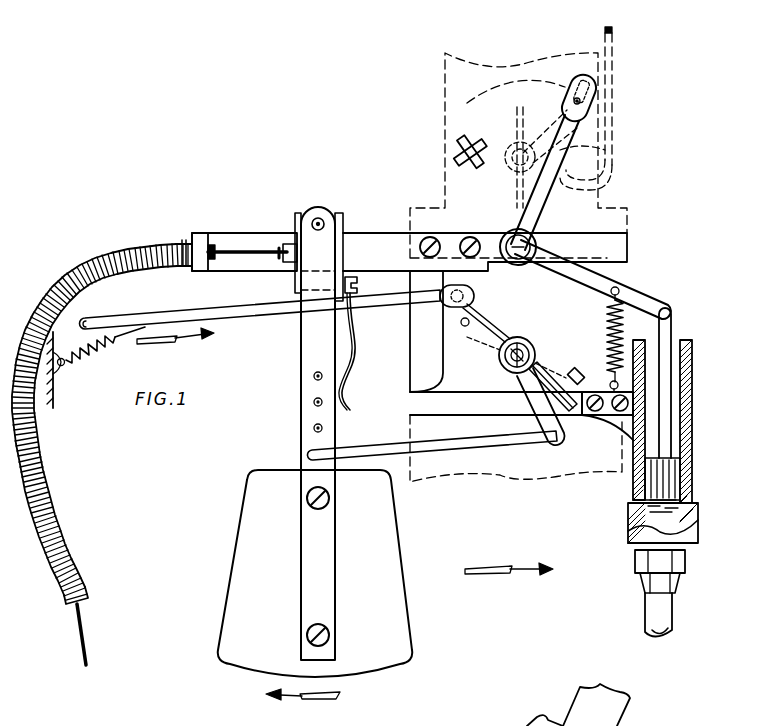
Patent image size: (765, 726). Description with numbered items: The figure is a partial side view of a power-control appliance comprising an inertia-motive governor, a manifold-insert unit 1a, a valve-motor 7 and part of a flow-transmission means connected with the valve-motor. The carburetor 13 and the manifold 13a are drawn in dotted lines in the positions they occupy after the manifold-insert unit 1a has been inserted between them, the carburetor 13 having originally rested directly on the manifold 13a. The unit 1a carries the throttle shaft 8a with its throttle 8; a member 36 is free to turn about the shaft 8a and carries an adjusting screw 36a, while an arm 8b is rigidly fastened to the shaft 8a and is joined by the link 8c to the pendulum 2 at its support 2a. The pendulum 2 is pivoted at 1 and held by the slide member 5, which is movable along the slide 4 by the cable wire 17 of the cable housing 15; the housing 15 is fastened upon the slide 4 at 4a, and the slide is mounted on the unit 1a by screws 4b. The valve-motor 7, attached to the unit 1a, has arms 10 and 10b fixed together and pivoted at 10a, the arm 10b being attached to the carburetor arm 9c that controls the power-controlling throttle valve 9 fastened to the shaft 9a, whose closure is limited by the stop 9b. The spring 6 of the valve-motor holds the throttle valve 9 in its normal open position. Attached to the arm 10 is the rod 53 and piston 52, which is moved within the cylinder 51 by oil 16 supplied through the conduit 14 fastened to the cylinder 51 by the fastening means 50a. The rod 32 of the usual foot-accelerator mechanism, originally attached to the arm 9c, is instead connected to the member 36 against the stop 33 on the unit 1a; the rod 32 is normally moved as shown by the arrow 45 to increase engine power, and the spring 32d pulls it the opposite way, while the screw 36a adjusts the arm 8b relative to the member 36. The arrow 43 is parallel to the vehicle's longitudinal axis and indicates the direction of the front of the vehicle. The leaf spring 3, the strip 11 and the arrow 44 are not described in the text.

The pivot 1 is at (318, 216).
The manifold-insert unit 1a is at (416, 382).
The pendulum 2 is at (230, 594).
The support 2a is at (300, 364).
The leaf spring 3 is at (358, 348).
The slide 4 is at (250, 234).
The fastening point of cable housing 4a is at (200, 240).
The screws 4b is at (424, 236).
The slide member 5 is at (294, 286).
The spring 6 is at (604, 322).
The valve-motor 7 is at (600, 420).
The throttle 8 is at (468, 344).
The throttle shaft 8a is at (524, 338).
The arm 8b is at (549, 442).
The link 8c is at (450, 440).
The throttle valve 9 is at (510, 112).
The shaft 9a is at (542, 122).
The stop 9b is at (480, 166).
The arm 9c is at (614, 153).
The arm 10 is at (562, 276).
The pivot 10a is at (540, 248).
The arm 10b is at (541, 216).
The guide strip 11 is at (614, 92).
The carburetor 13 is at (445, 145).
The manifold 13a is at (496, 478).
The conduit 14 is at (676, 616).
The cable housing 15 is at (80, 266).
The oil 16 is at (630, 512).
The cable wire 17 is at (240, 258).
The rod 32 is at (172, 316).
The spring 32d is at (99, 357).
The stop 33 is at (460, 323).
The member 36 is at (496, 316).
The adjusting screw 36a is at (580, 370).
The arrow 43 is at (500, 566).
The direction arrow 44 is at (322, 700).
The arrow 45 is at (170, 344).
The fastening means 50a is at (690, 570).
The cylinder 51 is at (696, 414).
The piston 52 is at (680, 480).
The rod 53 is at (678, 318).